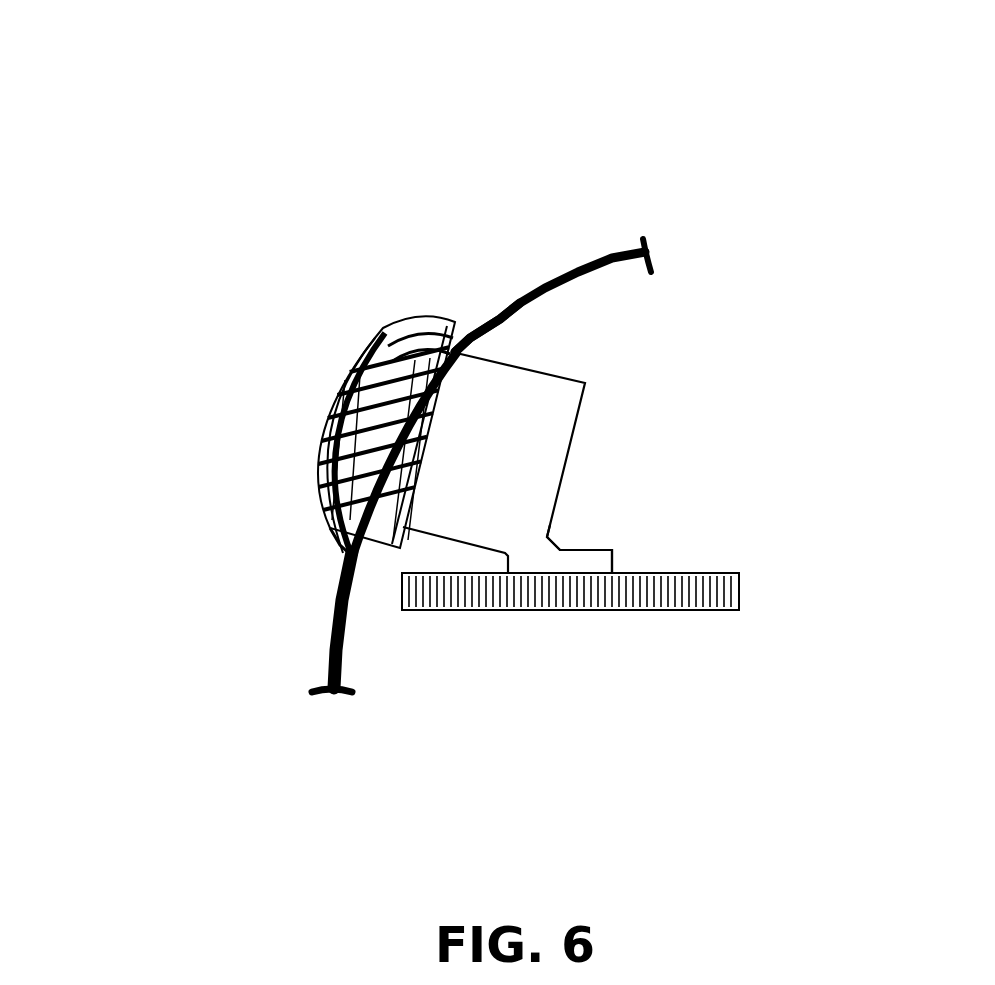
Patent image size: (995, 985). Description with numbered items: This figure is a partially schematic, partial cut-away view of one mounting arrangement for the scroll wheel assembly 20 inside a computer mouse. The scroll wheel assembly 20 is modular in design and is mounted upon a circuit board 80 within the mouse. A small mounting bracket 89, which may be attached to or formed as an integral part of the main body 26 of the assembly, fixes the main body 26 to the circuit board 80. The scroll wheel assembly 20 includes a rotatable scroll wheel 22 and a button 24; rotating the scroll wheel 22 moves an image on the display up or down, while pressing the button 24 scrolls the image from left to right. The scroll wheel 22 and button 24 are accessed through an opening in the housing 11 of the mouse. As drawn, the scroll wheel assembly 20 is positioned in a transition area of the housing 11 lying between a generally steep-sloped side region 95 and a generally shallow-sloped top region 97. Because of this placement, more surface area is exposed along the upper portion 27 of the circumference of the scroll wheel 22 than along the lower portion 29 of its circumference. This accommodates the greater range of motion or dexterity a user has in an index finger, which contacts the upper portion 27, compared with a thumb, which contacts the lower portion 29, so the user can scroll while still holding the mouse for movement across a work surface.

The housing 11 is at (663, 240).
The scroll wheel assembly 20 is at (337, 315).
The scroll wheel 22 is at (383, 338).
The button 24 is at (305, 428).
The main body 26 is at (479, 458).
The upper portion 27 is at (452, 305).
The lower portion 29 is at (330, 541).
The circuit board 80 is at (557, 620).
The mounting bracket 89 is at (612, 540).
The side region 95 is at (325, 641).
The top region 97 is at (603, 240).